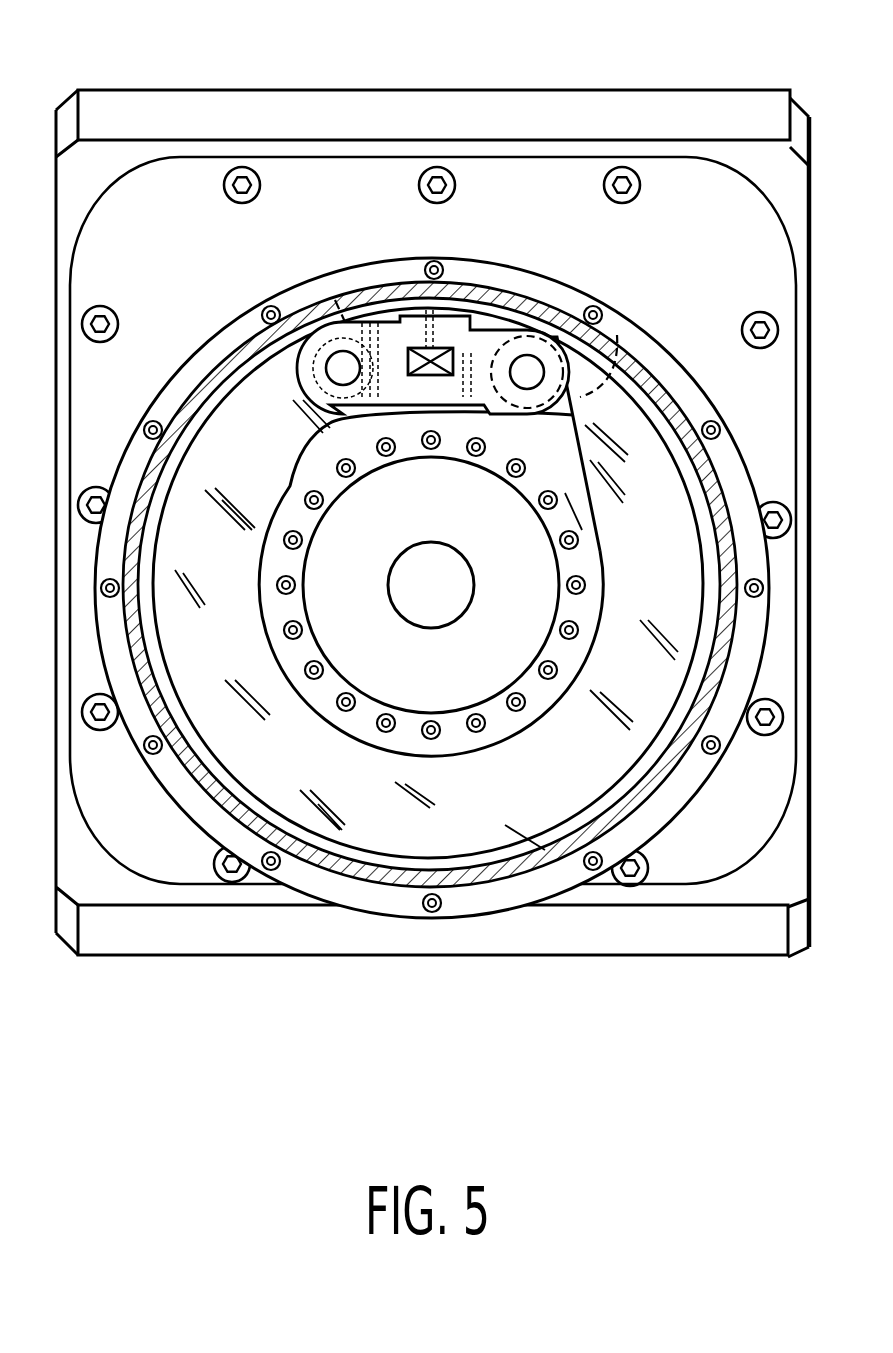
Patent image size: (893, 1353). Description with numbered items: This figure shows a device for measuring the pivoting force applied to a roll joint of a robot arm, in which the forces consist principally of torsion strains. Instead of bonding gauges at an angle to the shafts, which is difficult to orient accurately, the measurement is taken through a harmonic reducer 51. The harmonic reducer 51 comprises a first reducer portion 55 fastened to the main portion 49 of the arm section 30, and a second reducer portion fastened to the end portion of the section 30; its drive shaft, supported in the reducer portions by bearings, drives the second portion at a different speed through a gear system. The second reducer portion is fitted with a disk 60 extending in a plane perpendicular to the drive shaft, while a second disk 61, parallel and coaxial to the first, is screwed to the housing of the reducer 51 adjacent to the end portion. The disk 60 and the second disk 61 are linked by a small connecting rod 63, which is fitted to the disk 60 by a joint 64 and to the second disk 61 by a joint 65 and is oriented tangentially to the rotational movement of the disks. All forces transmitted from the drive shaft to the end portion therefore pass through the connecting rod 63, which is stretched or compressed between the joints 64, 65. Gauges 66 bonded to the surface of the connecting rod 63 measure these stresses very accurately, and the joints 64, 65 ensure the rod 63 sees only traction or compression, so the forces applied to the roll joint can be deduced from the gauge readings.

The section 30 is at (146, 86).
The main portion 49 is at (517, 115).
The first reducer portion 55 is at (703, 187).
The harmonic reducer 51 is at (506, 906).
The second disk 61 is at (368, 813).
The disk 60 is at (480, 433).
The connecting rod 63 is at (388, 332).
The gauges 66 is at (470, 310).
The joint 64 is at (617, 335).
The joint 65 is at (335, 300).